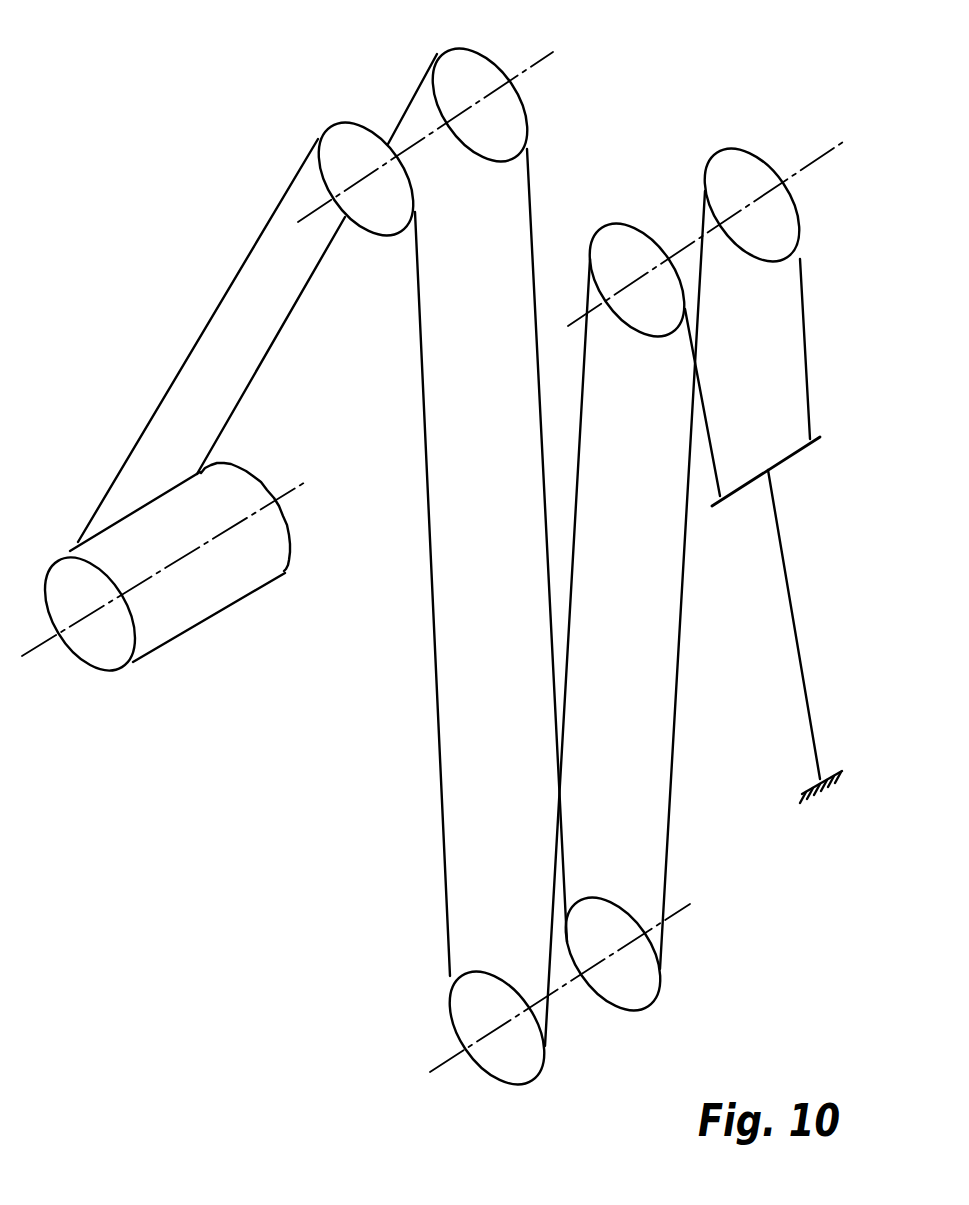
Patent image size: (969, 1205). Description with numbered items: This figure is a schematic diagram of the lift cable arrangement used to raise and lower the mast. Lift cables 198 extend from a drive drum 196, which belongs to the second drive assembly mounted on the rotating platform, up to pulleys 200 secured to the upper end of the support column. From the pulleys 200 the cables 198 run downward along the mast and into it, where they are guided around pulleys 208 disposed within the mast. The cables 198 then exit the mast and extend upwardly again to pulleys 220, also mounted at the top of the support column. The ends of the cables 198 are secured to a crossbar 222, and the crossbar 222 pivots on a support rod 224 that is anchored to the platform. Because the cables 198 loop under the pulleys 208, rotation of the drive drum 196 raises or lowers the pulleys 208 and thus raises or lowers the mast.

The drive drum 196 is at (230, 595).
The lift cables 198 is at (270, 348).
The pulleys 200 is at (445, 53).
The pulleys 208 is at (607, 1008).
The pulleys 220 is at (713, 158).
The crossbar 222 is at (787, 460).
The support rod 224 is at (787, 570).